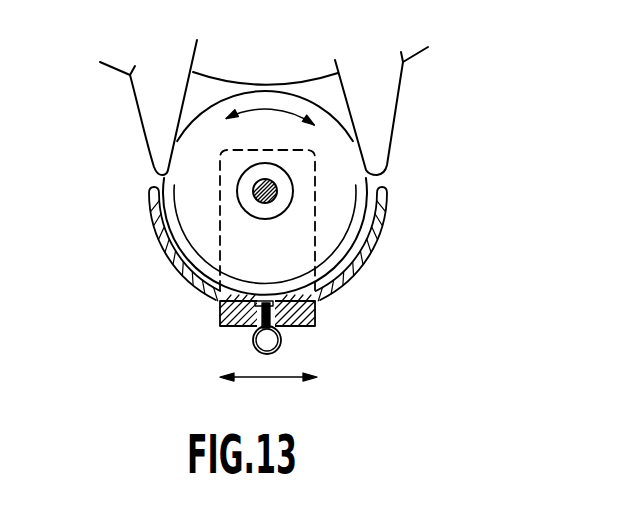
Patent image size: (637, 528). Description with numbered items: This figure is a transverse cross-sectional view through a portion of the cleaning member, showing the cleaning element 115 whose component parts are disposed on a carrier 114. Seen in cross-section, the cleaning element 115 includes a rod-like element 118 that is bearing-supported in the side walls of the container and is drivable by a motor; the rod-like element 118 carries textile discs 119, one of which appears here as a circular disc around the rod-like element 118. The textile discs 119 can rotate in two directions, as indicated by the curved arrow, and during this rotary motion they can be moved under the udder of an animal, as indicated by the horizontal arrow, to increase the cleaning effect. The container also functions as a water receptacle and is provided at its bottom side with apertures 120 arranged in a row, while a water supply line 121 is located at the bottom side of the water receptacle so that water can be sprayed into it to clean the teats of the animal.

The carrier 114 is at (222, 325).
The cleaning element 115 is at (162, 269).
The rod-like element 118 is at (266, 214).
The textile discs 119 is at (190, 193).
The apertures 120 is at (289, 285).
The water supply line 121 is at (281, 341).